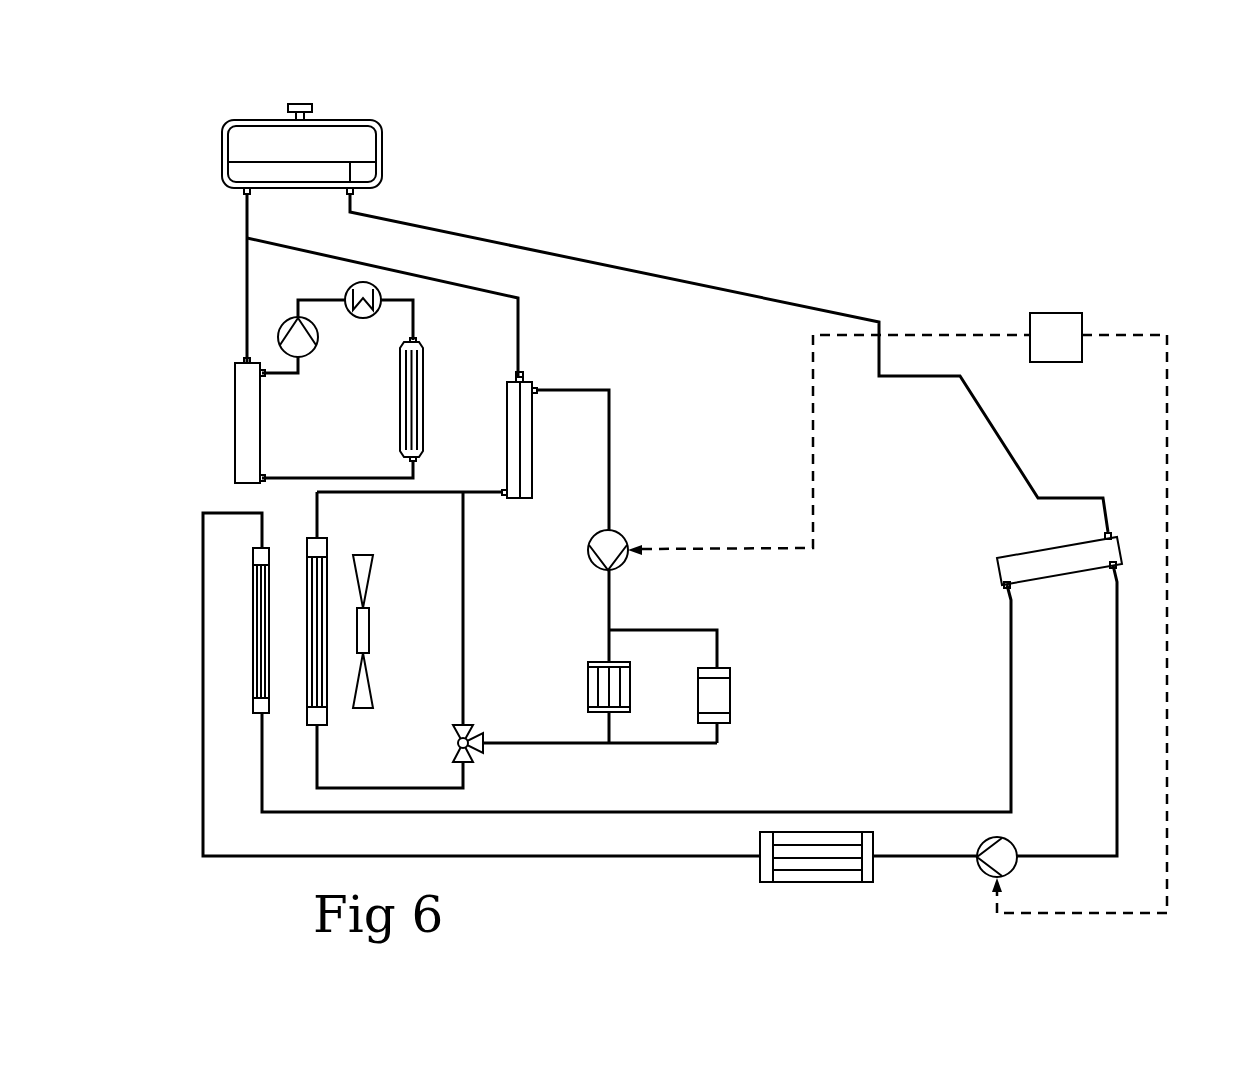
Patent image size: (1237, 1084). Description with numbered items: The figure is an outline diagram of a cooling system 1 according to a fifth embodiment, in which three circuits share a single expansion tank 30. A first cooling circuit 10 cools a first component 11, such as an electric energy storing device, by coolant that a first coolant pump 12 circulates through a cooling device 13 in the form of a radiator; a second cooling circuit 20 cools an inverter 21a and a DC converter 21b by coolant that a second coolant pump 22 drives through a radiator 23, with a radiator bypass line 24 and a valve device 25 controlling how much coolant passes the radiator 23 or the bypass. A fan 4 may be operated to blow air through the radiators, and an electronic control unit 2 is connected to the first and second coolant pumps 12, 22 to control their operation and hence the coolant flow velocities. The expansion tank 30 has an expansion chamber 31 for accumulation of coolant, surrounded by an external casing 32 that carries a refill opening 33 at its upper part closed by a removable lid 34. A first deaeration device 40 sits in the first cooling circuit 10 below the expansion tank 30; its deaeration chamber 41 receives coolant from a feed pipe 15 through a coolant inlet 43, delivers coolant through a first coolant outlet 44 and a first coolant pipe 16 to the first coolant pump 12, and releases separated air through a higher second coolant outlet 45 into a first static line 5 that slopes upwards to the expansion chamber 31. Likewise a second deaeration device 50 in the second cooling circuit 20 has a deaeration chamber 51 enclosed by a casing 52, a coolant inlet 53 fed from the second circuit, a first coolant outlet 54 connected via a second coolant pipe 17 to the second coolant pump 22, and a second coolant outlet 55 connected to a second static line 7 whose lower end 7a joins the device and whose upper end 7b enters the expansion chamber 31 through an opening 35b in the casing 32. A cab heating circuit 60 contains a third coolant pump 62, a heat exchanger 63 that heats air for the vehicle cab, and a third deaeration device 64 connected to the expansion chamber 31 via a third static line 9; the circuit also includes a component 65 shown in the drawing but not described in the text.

The cooling system 1 is at (640, 172).
The electronic control unit 2 is at (1060, 320).
The fan 4 is at (367, 580).
The first static line 5 is at (714, 284).
The second static line 7 is at (522, 336).
The lower end 7a is at (523, 376).
The upper end 7b is at (255, 200).
The third static line 9 is at (243, 290).
The first cooling circuit 10 is at (592, 880).
The first component 11 is at (827, 877).
The first coolant pump 12 is at (1007, 853).
The cooling device 13 is at (258, 590).
The feed pipe 15 is at (1007, 647).
The first coolant pipe 16 is at (1112, 710).
The second coolant pipe 17 is at (612, 500).
The second cooling circuit 20 is at (628, 415).
The inverter 21a is at (598, 688).
The DC converter 21b is at (723, 700).
The second coolant pump 22 is at (613, 540).
The radiator 23 is at (322, 570).
The radiator bypass line 24 is at (458, 655).
The valve device 25 is at (453, 743).
The expansion tank 30 is at (390, 100).
The expansion chamber 31 is at (360, 145).
The external casing 32 is at (252, 120).
The refill opening 33 is at (302, 122).
The removable lid 34 is at (303, 101).
The opening 35b is at (243, 194).
The first deaeration device 40 is at (1147, 548).
The deaeration chamber 41 is at (1057, 563).
The coolant inlet 43 is at (1012, 588).
The first coolant outlet 44 is at (1118, 560).
The second coolant outlet 45 is at (1113, 530).
The second deaeration device 50 is at (531, 518).
The deaeration chamber 51 is at (525, 437).
The casing 52 is at (533, 468).
The coolant inlet 53 is at (503, 500).
The first coolant outlet 54 is at (535, 395).
The second coolant outlet 55 is at (505, 375).
The cab heating circuit 60 is at (435, 322).
The third coolant pump 62 is at (305, 347).
The heat exchanger 63 is at (405, 413).
The third deaeration device 64 is at (253, 410).
The heat exchanger 65 is at (363, 318).